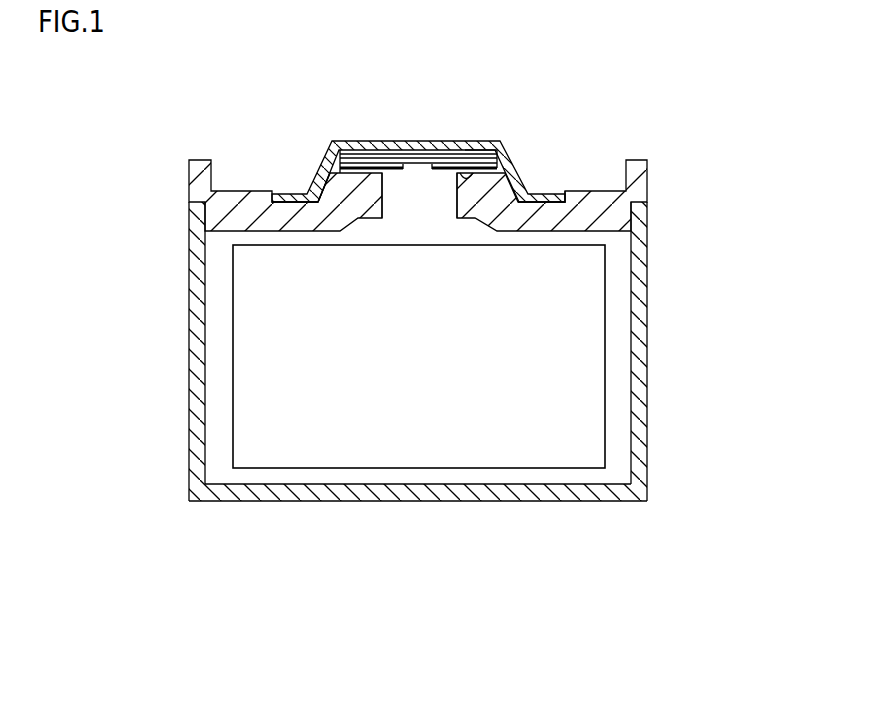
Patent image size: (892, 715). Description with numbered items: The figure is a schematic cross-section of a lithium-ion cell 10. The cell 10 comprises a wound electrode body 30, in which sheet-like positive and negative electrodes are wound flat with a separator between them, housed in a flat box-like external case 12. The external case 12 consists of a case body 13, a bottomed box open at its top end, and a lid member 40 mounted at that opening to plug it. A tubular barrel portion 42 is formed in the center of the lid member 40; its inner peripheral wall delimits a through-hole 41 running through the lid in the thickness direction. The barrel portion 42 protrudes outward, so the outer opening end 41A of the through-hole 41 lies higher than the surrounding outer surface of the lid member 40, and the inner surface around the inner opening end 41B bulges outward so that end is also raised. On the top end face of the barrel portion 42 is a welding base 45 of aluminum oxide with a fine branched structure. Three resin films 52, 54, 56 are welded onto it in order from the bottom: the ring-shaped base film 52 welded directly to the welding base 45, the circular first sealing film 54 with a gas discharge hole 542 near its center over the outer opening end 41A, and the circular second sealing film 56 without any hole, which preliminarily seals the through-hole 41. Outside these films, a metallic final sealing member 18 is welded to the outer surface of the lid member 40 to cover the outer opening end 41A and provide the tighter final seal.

The cell 10 is at (707, 148).
The external case 12 is at (189, 363).
The case body 13 is at (648, 353).
The final sealing member 18 is at (515, 162).
The electrode body 30 is at (375, 467).
The lid member 40 is at (628, 160).
The through-hole 41 is at (442, 187).
The outer opening end 41A is at (387, 183).
The inner opening end 41B is at (453, 218).
The barrel portion 42 is at (497, 196).
The welding base 45 is at (465, 152).
The resin film 52 is at (318, 196).
The resin film 54 is at (338, 188).
The resin film 56 is at (360, 156).
The hole 542 is at (428, 158).